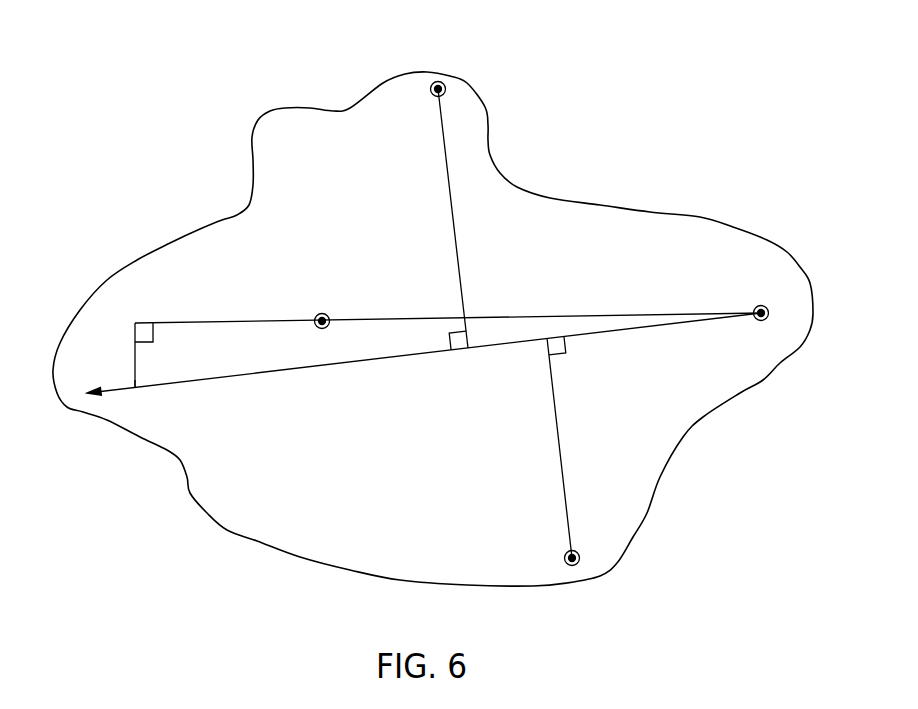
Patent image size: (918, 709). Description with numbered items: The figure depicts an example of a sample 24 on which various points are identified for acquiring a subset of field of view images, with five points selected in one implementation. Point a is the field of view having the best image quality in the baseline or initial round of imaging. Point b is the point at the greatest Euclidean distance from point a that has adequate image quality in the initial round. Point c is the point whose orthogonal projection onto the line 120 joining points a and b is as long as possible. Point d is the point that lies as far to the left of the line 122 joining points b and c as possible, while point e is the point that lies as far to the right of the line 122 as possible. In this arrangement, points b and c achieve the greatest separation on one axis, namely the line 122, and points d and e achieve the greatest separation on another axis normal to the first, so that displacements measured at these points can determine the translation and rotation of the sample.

The sample 24 is at (389, 534).
The line joining points (a) and (b) 120 is at (518, 317).
The line joining points (b) and (c) 122 is at (307, 368).
The point a is at (321, 309).
The point b is at (760, 300).
The point c is at (141, 396).
The point d is at (578, 546).
The point e is at (442, 71).